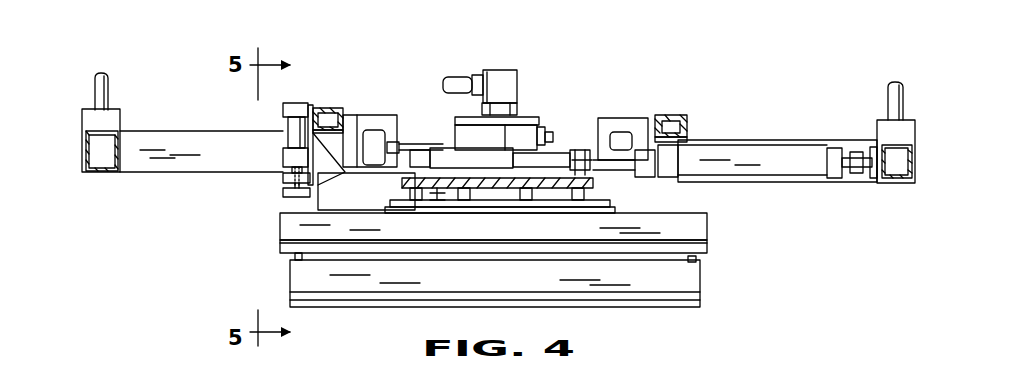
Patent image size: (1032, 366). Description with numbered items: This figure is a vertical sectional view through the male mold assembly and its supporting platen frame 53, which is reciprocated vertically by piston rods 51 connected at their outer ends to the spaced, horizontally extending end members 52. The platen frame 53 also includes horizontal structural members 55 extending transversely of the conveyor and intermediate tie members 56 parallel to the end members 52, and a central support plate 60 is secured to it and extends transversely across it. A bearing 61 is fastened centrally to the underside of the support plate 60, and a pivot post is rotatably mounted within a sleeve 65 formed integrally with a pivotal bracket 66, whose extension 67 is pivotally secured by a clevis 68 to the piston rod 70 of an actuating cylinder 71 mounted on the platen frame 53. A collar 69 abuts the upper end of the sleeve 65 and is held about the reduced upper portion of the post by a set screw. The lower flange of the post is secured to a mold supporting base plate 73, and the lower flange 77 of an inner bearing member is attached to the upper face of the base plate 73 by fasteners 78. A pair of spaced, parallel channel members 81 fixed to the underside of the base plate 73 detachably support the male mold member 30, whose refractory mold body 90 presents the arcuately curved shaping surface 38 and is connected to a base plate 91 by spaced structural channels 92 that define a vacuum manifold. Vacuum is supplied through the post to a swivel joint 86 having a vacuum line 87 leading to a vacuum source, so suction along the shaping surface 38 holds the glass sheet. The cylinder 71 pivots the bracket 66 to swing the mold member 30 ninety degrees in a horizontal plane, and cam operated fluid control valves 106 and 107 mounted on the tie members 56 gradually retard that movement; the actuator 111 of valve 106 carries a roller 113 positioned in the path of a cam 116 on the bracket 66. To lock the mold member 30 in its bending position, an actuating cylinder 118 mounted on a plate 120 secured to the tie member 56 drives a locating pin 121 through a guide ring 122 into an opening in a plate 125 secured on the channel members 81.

The male mold member 30 is at (393, 307).
The shaping surface 38 is at (580, 300).
The piston rods 51 is at (97, 80).
The end members 52 is at (97, 172).
The platen frame 53 is at (166, 177).
The horizontal structural members 55 is at (145, 140).
The tie members 56 is at (325, 108).
The central support plate 60 is at (590, 183).
The bearing 61 is at (520, 200).
The sleeve 65 is at (548, 127).
The pivotal bracket 66 is at (445, 150).
The extension 67 is at (572, 158).
The clevis 68 is at (640, 158).
The collar 69 is at (527, 120).
The piston rod 70 is at (650, 165).
The actuating cylinder 71 is at (770, 155).
The mold supporting base plate 73 is at (450, 205).
The lower flange 77 is at (517, 207).
The fasteners 78 is at (418, 192).
The channel members 81 is at (700, 232).
The swivel joint 86 is at (508, 72).
The vacuum line 87 is at (460, 85).
The mold body 90 is at (630, 290).
The base plate 91 is at (705, 250).
The structural channels 92 is at (698, 262).
The fluid control valve 106 is at (368, 130).
The fluid control valve 107 is at (620, 132).
The actuator 111 is at (392, 175).
The roller 113 is at (393, 142).
The cam 116 is at (413, 144).
The actuating cylinder 118 is at (287, 128).
The plate 120 is at (335, 168).
The locating pin 121 is at (290, 169).
The guide ring 122 is at (283, 186).
The plate 125 is at (283, 196).